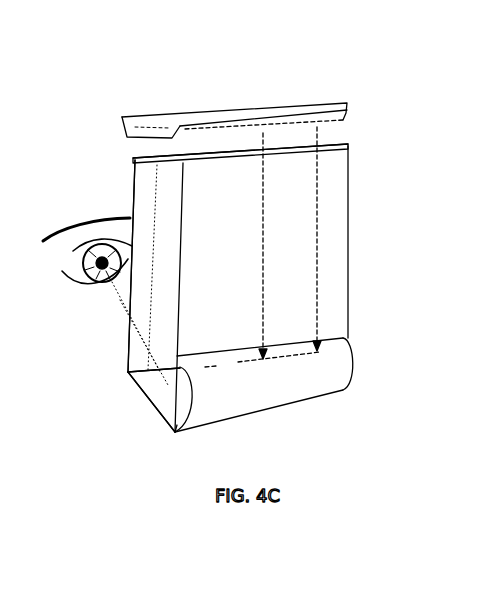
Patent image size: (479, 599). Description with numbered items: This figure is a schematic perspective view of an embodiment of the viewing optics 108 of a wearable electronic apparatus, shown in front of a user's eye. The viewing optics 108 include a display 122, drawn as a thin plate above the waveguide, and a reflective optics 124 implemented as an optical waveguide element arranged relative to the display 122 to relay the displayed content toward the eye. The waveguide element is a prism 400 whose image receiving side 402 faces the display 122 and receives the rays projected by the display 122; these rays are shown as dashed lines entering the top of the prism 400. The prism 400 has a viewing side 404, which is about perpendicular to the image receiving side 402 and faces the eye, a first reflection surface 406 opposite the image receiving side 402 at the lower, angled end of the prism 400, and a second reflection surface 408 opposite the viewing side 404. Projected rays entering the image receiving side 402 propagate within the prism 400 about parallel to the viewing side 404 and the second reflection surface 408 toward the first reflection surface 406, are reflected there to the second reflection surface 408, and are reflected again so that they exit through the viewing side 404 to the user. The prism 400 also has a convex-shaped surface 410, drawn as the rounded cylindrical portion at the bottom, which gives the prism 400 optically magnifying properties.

The viewing optics 108 is at (214, 73).
The display 122 is at (157, 116).
The prism 400 is at (368, 227).
The image receiving side 402 is at (310, 147).
The viewing side 404 is at (126, 325).
The reflective optics 124 is at (117, 378).
The first reflection surface 406 is at (152, 408).
The second reflection surface 408 is at (173, 400).
The convex-shaped surface 410 is at (353, 363).